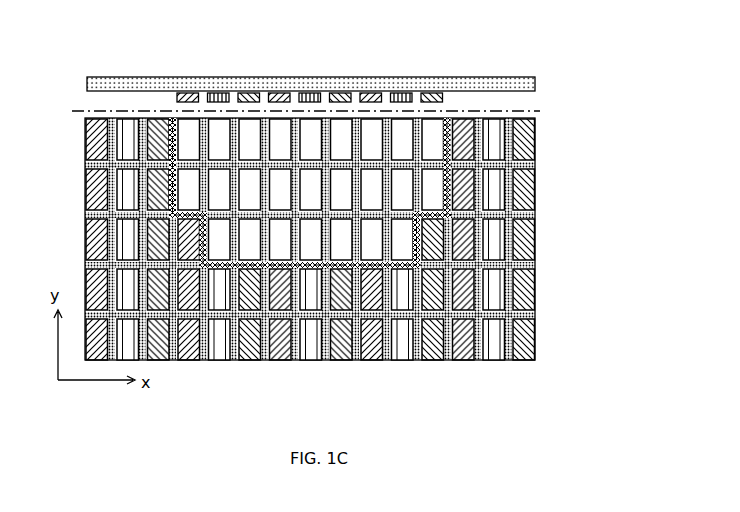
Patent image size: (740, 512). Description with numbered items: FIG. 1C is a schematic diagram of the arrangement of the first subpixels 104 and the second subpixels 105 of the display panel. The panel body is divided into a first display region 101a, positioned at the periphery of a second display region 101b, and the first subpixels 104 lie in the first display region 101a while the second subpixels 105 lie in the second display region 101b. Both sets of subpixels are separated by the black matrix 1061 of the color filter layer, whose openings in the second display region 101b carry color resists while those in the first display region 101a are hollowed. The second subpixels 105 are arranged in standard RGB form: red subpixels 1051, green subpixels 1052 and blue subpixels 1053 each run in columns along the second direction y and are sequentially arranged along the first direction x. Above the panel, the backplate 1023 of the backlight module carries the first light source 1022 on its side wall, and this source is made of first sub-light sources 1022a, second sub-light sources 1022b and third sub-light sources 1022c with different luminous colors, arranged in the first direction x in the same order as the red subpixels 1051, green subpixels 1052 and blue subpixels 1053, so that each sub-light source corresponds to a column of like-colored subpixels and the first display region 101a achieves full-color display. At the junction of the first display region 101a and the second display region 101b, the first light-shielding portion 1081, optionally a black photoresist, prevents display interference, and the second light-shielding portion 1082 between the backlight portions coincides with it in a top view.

The first display region 101a is at (177, 118).
The second display region 101b is at (112, 118).
The first light source 1022 is at (310, 55).
The first sub-light sources 1022a is at (372, 72).
The second sub-light sources 1022b is at (312, 93).
The third sub-light sources 1022c is at (250, 93).
The backplate 1023 is at (535, 87).
The first light-shielding portion 1081 is at (394, 193).
The second light-shielding portion 1082 is at (452, 133).
The first subpixels 104 is at (437, 183).
The black matrix 1061 is at (535, 216).
The second subpixels 105 is at (369, 243).
The red subpixels 1051 is at (465, 337).
The green subpixels 1052 is at (498, 290).
The blue subpixels 1053 is at (603, 360).